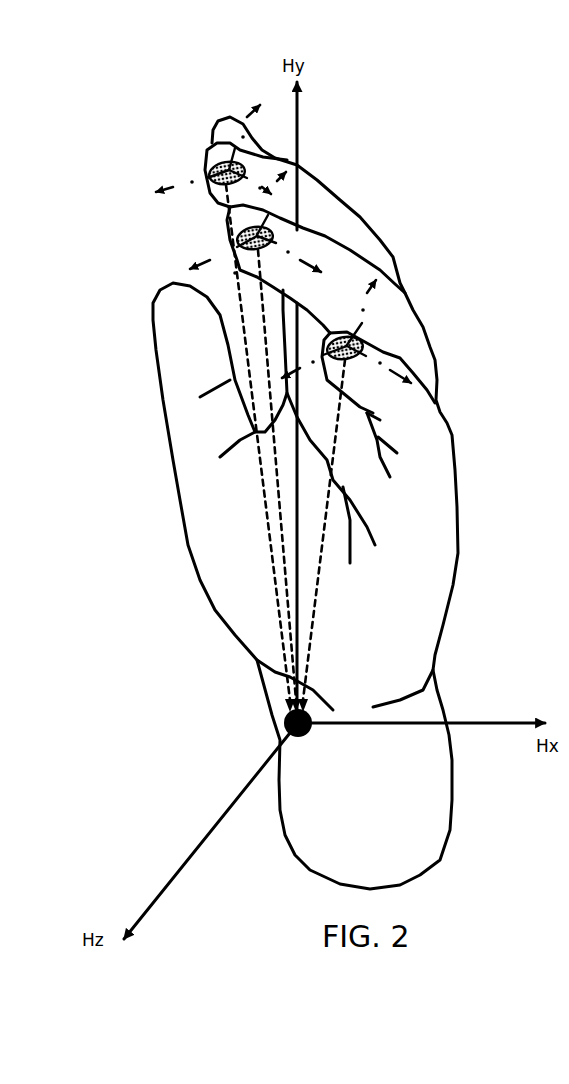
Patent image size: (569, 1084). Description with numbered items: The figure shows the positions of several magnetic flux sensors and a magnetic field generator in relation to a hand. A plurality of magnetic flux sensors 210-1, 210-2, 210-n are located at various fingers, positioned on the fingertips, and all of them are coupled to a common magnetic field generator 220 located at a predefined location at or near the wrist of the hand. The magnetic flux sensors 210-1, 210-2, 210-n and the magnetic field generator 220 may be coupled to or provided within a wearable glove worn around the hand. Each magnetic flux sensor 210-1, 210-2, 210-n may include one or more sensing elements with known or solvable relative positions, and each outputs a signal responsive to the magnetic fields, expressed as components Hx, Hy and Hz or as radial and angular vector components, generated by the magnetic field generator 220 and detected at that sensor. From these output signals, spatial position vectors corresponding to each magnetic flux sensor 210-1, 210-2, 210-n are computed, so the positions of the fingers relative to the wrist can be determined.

The magnetic flux sensor 210-1 is at (195, 155).
The magnetic flux sensor 210-2 is at (224, 229).
The magnetic flux sensor 210-n is at (380, 338).
The magnetic field generator 220 is at (259, 715).